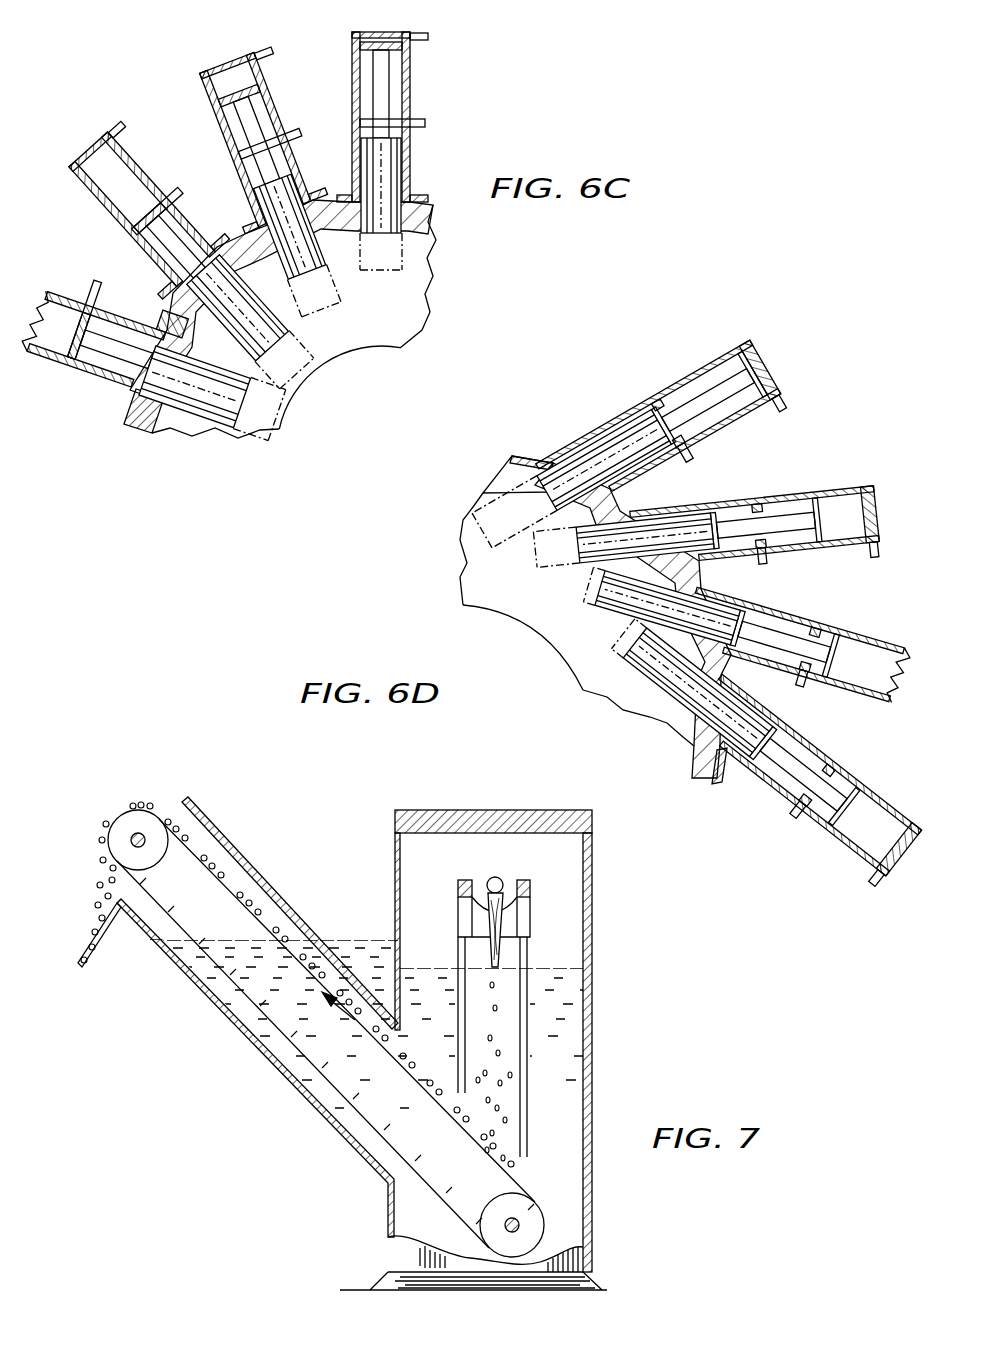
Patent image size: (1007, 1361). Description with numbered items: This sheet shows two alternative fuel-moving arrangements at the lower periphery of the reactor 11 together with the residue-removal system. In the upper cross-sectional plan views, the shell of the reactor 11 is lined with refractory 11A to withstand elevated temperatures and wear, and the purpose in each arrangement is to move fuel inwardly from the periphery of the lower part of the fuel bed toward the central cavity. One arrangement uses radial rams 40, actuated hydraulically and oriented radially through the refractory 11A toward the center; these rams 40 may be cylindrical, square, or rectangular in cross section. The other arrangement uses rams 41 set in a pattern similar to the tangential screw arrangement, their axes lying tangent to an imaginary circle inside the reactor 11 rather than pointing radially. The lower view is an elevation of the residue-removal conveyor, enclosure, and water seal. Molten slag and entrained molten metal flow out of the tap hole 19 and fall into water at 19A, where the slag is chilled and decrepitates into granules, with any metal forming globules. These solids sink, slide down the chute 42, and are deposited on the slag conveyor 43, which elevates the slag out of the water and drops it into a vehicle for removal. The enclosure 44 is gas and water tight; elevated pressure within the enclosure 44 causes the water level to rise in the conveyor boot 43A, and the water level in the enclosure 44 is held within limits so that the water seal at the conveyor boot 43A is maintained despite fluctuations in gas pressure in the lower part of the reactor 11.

In FIG. 6C, the reactor 11 is at (232, 226).
In FIG. 6D, the reactor 11 is at (522, 450).
In FIG. 6C, the refractory 11A is at (141, 420).
In FIG. 6D, the refractory 11A is at (500, 472).
In FIG. 6C, the radial rams 40 is at (390, 171).
In FIG. 6D, the rams 41 is at (610, 450).
In FIG. 7, the tap hole 19 is at (498, 878).
In FIG. 7, the water 19A is at (567, 967).
In FIG. 7, the chute 42 is at (525, 1018).
In FIG. 7, the slag conveyor 43 is at (340, 1095).
In FIG. 7, the conveyor boot 43A is at (211, 1002).
In FIG. 7, the enclosure 44 is at (578, 888).